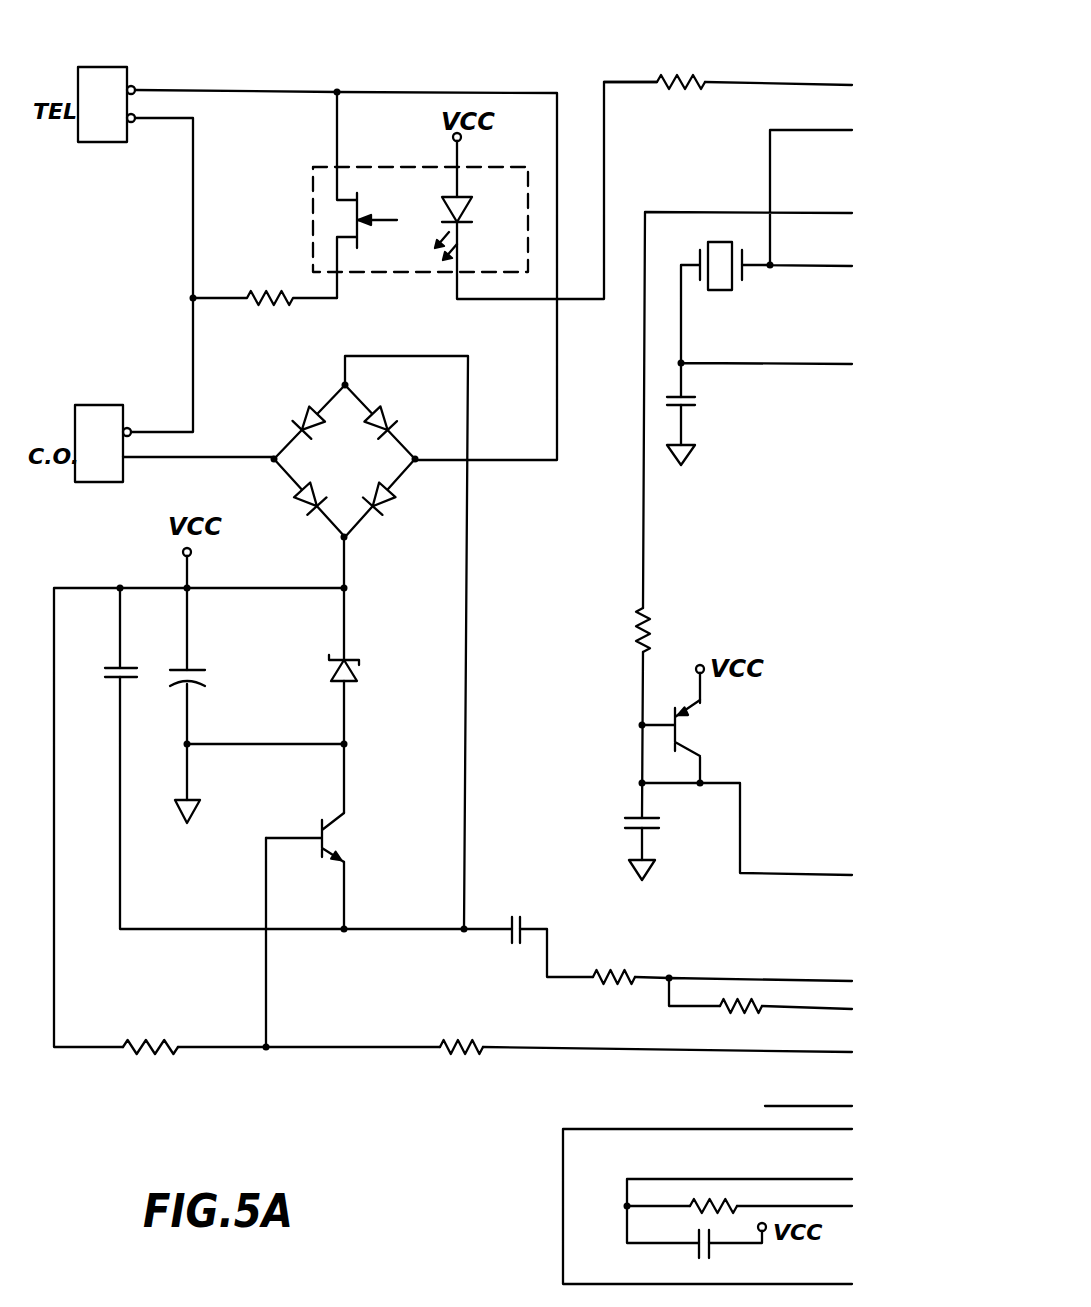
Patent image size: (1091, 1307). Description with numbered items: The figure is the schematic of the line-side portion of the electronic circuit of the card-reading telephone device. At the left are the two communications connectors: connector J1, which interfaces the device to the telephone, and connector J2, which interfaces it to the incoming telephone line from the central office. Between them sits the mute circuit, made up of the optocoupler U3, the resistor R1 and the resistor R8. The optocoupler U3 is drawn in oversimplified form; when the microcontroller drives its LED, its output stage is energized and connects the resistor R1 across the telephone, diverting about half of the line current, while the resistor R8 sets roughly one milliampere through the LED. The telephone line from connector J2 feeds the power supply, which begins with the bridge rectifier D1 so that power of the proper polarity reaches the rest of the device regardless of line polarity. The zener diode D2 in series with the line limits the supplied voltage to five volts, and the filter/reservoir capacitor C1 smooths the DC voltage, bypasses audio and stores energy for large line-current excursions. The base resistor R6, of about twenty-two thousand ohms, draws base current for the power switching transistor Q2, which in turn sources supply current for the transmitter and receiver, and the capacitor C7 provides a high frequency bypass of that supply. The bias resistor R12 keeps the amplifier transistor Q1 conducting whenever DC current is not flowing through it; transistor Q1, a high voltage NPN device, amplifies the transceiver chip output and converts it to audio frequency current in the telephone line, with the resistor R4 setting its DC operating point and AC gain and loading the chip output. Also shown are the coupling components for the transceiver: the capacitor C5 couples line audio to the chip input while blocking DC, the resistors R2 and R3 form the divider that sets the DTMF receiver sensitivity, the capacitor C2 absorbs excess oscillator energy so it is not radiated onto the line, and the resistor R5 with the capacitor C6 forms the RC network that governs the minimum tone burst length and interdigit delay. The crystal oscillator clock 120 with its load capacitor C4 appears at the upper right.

The communications connector J1 is at (106, 91).
The communications connector J2 is at (174, 429).
The resistor R1 is at (268, 280).
The optocoupler U3 is at (420, 195).
The resistor R8 is at (688, 94).
The crystal oscillator clock 120 is at (721, 242).
The capacitor C4 is at (697, 396).
The bridge rectifier D1 is at (297, 440).
The capacitor C2 is at (108, 668).
The filter/reservoir capacitor C1 is at (193, 668).
The zener diode D2 is at (356, 668).
The amplifier transistor Q1 is at (330, 842).
The base resistor R6 is at (636, 630).
The power switching transistor Q2 is at (685, 736).
The capacitor C7 is at (655, 817).
The capacitor C5 is at (524, 925).
The resistor R2 is at (640, 948).
The resistor R3 is at (752, 1005).
The bias resistor R12 is at (151, 1051).
The resistor R4 is at (494, 1026).
The resistor R5 is at (725, 1204).
The capacitor C6 is at (696, 1250).